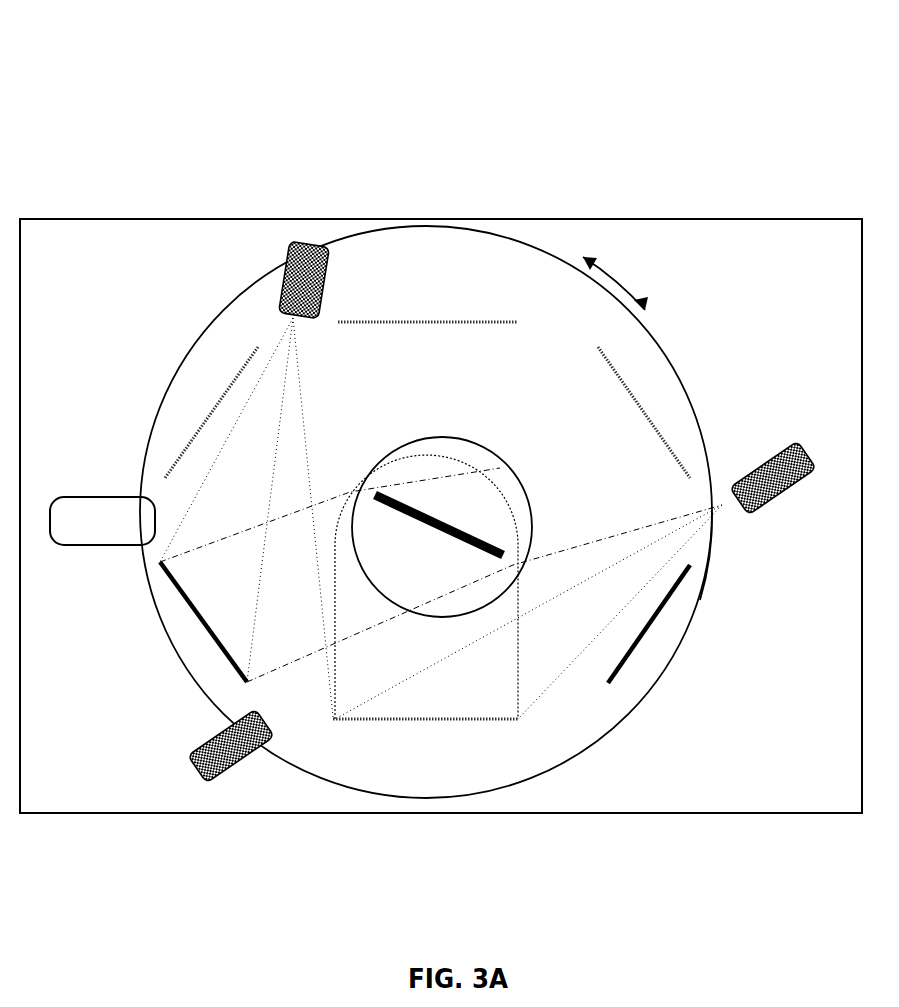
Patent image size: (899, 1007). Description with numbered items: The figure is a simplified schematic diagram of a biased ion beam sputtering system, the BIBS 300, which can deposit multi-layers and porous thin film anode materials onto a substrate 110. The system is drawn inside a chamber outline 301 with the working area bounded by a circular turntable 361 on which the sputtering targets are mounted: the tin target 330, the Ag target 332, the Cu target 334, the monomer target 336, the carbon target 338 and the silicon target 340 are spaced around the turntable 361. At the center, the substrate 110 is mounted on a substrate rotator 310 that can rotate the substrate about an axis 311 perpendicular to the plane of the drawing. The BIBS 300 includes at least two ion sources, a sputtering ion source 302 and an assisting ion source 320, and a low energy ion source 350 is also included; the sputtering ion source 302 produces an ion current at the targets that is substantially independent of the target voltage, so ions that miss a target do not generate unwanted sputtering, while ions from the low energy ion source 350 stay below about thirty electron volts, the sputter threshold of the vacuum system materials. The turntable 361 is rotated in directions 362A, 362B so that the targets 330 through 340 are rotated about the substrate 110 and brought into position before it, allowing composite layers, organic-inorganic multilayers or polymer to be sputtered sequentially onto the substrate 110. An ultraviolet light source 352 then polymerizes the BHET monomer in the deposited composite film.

The BIBS 300 is at (175, 104).
The vacuum chamber 301 is at (400, 226).
The sputtering ion source 302 is at (300, 246).
The substrate rotator 310 is at (412, 441).
The axis 311 is at (430, 500).
The substrate 110 is at (380, 498).
The assisting ion source 320 is at (265, 740).
The tin target 330 is at (178, 592).
The Ag target 332 is at (234, 378).
The Cu target 334 is at (503, 321).
The monomer target 336 is at (644, 403).
The carbon target 338 is at (631, 658).
The silicon target 340 is at (500, 722).
The low energy ion source 350 is at (812, 484).
The ultraviolet light source 352 is at (58, 497).
The turntable 361 is at (712, 573).
The rotation direction 362A is at (640, 296).
The rotation direction 362B is at (572, 249).